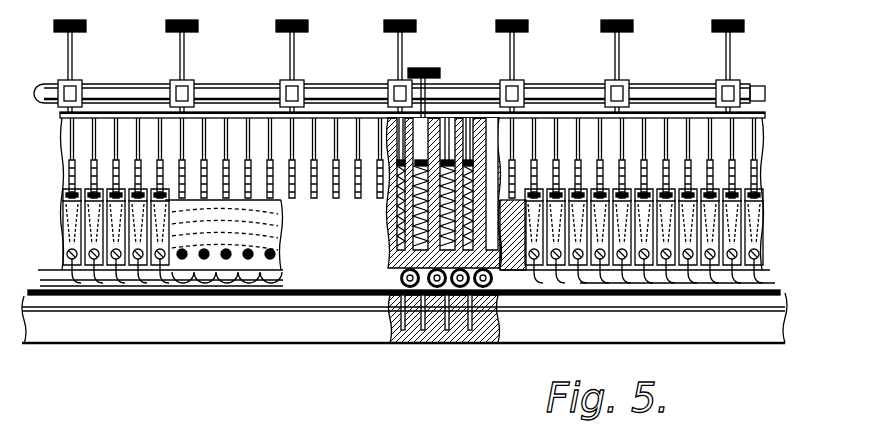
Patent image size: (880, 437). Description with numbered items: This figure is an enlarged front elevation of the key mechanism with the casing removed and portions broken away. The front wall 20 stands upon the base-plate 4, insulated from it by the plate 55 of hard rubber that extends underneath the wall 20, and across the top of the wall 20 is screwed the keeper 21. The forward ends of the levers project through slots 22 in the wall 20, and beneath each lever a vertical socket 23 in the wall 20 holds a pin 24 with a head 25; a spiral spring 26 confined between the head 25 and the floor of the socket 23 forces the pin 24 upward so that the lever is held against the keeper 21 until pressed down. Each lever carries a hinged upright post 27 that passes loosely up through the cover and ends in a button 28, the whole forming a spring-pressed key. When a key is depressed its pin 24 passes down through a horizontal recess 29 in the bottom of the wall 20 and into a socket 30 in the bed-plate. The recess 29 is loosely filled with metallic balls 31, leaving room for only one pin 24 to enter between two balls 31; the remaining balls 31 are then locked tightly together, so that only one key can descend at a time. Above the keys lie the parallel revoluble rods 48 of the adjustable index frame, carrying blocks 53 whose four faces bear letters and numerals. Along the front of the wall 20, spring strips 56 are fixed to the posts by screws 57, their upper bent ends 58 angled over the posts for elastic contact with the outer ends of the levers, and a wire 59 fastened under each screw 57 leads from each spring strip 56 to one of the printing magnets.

The base-plate 4 is at (485, 331).
The wall 20 is at (404, 241).
The keeper 21 is at (62, 114).
The slots 22 is at (72, 149).
The vertical sockets 23 is at (396, 222).
The pins 24 is at (397, 239).
The heads 25 is at (396, 162).
The spiral springs 26 is at (392, 201).
The hinged upright post 27 is at (296, 58).
The button 28 is at (294, 19).
The horizontal recess 29 is at (497, 285).
The socket 30 is at (457, 322).
The metallic balls 31 is at (396, 278).
The revoluble rods 48 is at (125, 84).
The blocks 53 is at (281, 82).
The plate of hard rubber 55 is at (70, 296).
The spring strips 56 is at (72, 214).
The screws 57 is at (66, 254).
The bent ends 58 is at (62, 194).
The wire 59 is at (58, 283).